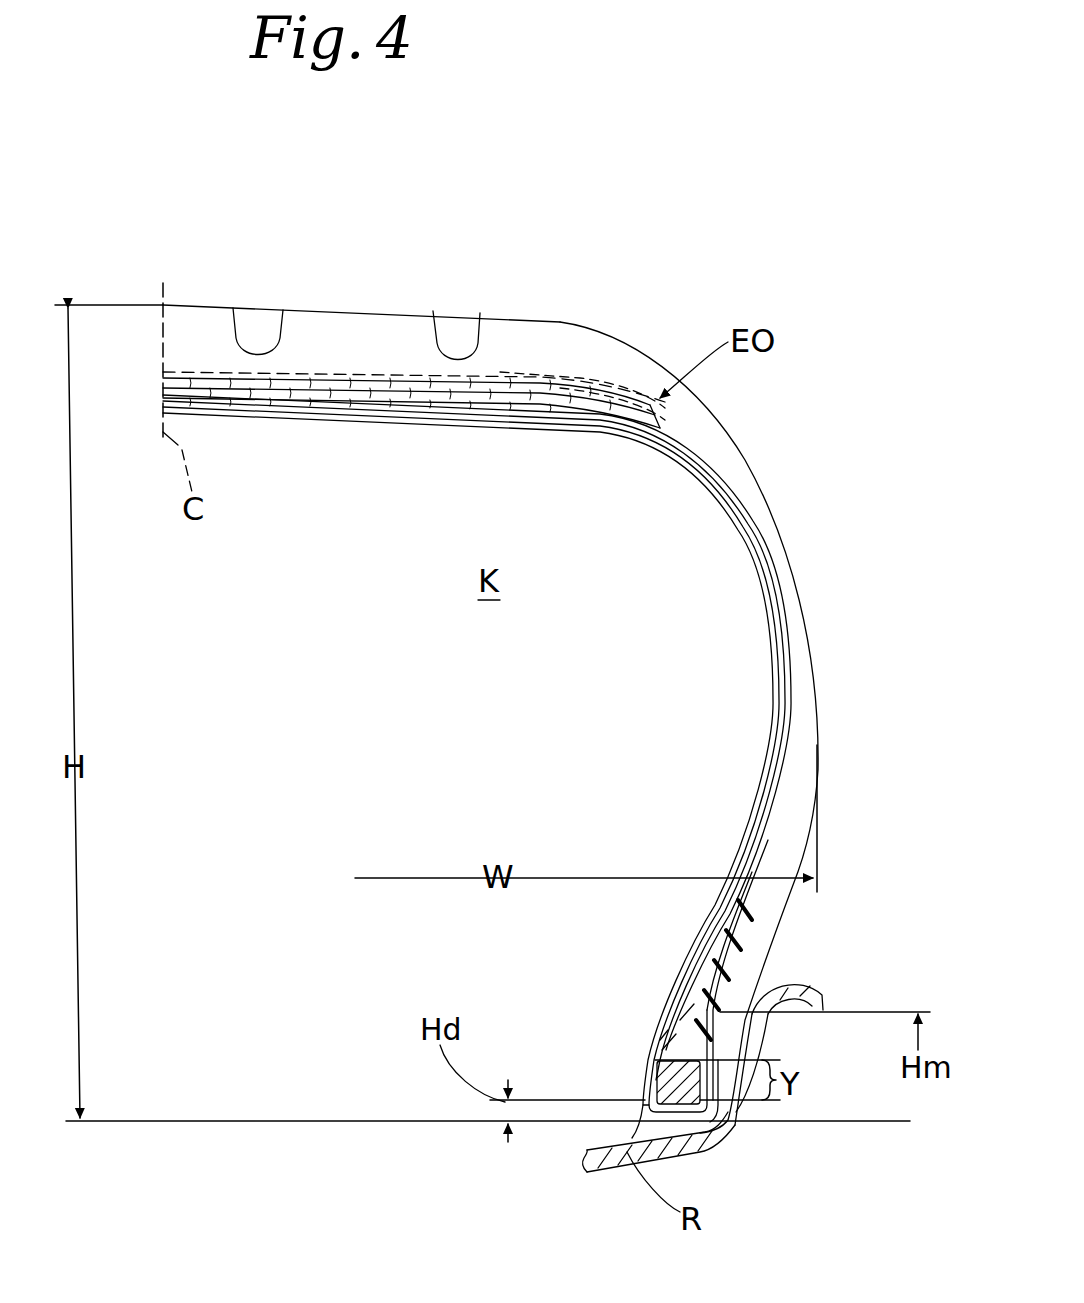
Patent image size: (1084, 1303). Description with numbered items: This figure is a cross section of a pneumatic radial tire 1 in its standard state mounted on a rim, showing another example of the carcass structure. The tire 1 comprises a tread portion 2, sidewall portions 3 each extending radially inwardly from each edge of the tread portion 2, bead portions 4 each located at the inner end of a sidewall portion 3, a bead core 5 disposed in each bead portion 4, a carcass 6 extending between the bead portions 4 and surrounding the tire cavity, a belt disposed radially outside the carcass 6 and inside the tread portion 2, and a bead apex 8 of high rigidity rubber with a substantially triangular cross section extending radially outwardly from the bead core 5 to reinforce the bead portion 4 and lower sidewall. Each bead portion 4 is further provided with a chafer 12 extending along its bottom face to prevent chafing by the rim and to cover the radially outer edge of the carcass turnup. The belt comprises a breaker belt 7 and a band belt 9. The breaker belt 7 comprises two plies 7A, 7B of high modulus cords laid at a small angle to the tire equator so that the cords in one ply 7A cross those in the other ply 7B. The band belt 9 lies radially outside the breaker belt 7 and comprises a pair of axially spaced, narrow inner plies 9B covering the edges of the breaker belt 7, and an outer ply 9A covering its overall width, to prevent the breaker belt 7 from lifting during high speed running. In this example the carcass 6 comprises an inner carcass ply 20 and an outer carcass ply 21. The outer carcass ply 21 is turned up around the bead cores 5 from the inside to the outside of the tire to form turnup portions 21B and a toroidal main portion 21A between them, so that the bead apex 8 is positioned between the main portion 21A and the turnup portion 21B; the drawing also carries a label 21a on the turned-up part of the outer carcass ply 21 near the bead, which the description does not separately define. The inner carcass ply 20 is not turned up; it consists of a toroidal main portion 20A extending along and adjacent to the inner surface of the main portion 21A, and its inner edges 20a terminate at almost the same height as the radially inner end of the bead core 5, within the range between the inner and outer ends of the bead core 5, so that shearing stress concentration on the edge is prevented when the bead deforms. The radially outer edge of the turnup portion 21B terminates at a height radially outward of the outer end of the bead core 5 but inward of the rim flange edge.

The pneumatic radial tire 1 is at (518, 292).
The tread portion 2 is at (200, 322).
The sidewall portion 3 is at (830, 686).
The bead portion 4 is at (784, 978).
The bead core 5 is at (668, 1071).
The carcass 6 is at (818, 395).
The breaker belt 7 is at (392, 195).
The breaker ply 7A is at (322, 386).
The breaker ply 7B is at (312, 378).
The bead apex 8 is at (682, 1026).
The band belt 9 is at (684, 258).
The outer band ply 9A is at (565, 385).
The inner band ply 9B is at (600, 385).
The chafer 12 is at (665, 1133).
The inner carcass ply 20 is at (708, 478).
The main portion of inner carcass ply 20A is at (755, 578).
The inner edge of inner carcass ply 20a is at (640, 1108).
The outer carcass ply 21 is at (735, 515).
The main portion of outer carcass ply 21A is at (780, 600).
The turnup portion of outer carcass ply 21a is at (705, 985).
The turnup portion of outer carcass ply 21B is at (720, 1053).